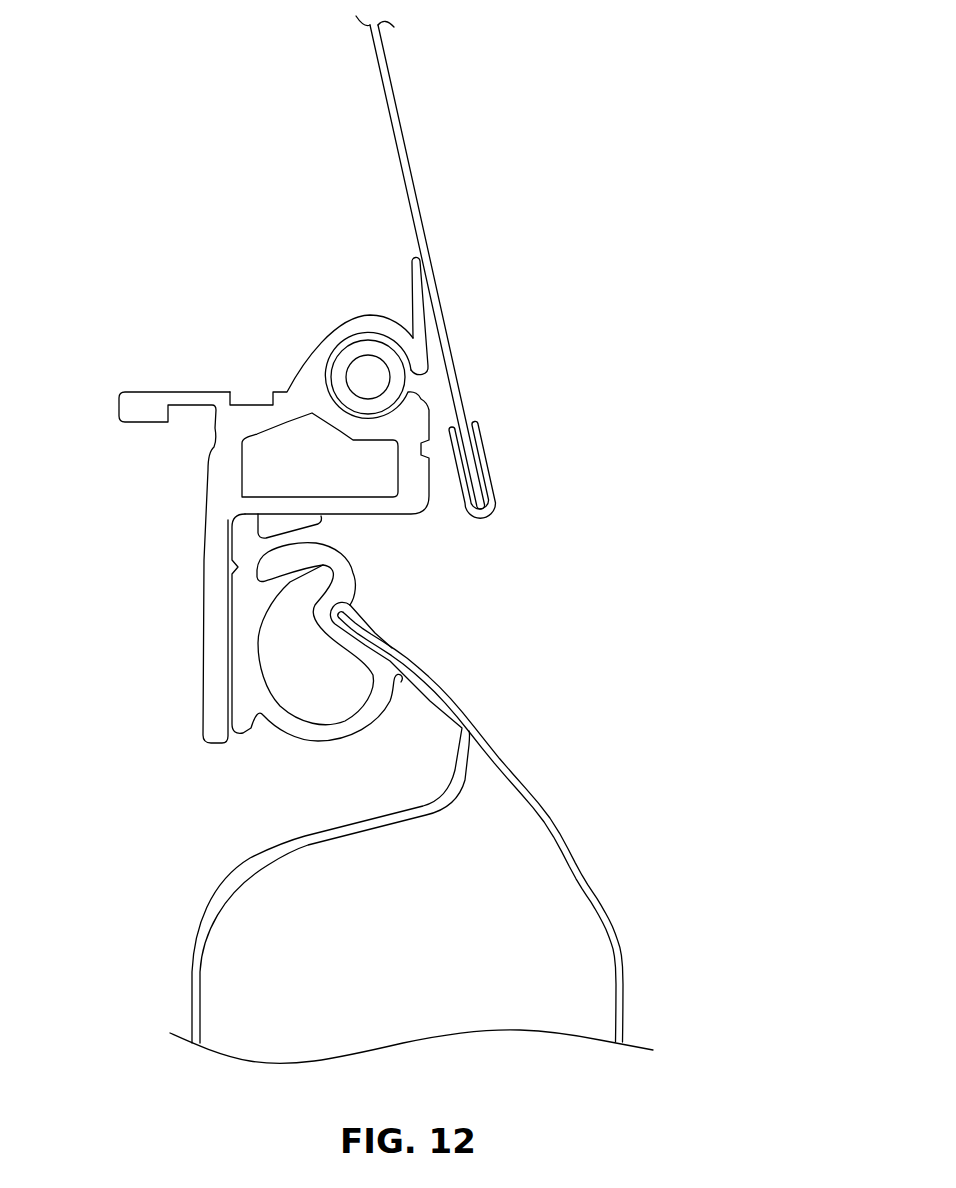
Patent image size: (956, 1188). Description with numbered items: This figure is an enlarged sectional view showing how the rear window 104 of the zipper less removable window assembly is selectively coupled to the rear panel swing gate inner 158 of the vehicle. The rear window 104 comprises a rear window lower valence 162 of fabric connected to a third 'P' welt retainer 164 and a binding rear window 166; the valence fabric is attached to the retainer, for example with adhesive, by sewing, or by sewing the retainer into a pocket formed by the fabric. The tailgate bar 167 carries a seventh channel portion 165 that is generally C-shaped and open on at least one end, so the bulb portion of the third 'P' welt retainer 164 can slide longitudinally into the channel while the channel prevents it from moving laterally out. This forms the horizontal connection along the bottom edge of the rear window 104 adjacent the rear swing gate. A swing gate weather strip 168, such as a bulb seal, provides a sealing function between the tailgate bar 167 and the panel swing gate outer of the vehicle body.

The rear window 104 is at (372, 540).
The rear panel swing gate inner 158 is at (197, 933).
The rear window lower valence 162 is at (398, 108).
The third 'P' welt retainer 164 is at (407, 388).
The seventh channel portion 165 is at (367, 340).
The binding rear window 166 is at (493, 513).
The tailgate bar 167 is at (253, 416).
The swing gate weather strip 168 is at (247, 625).